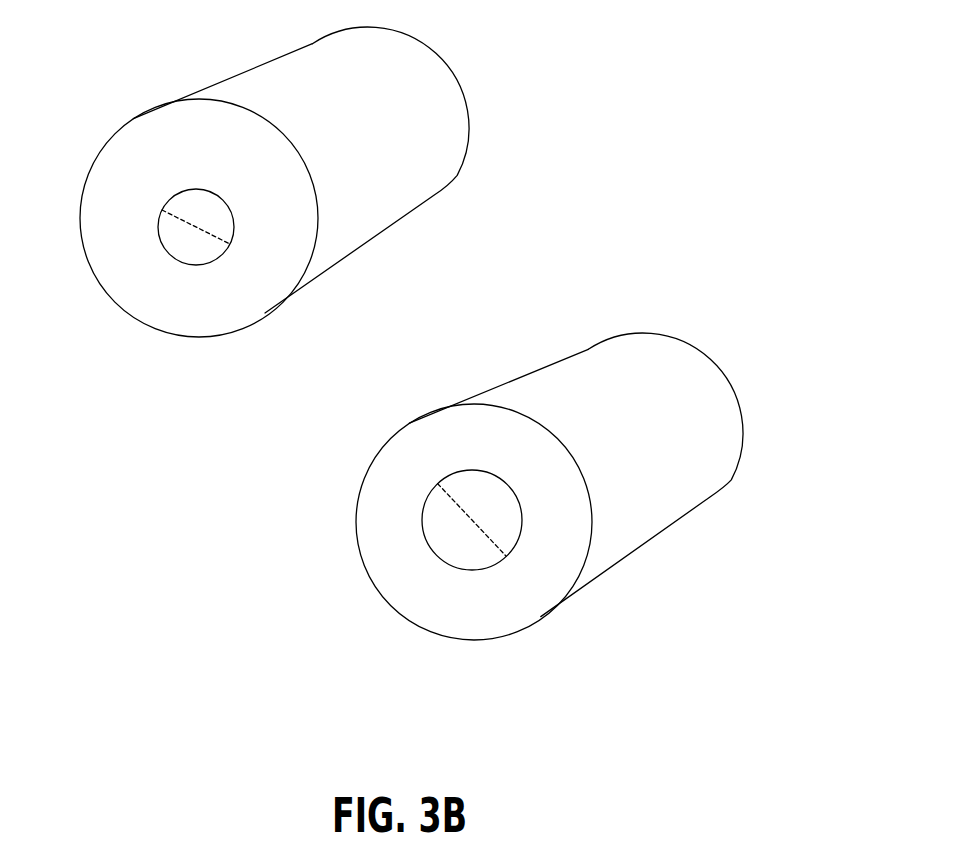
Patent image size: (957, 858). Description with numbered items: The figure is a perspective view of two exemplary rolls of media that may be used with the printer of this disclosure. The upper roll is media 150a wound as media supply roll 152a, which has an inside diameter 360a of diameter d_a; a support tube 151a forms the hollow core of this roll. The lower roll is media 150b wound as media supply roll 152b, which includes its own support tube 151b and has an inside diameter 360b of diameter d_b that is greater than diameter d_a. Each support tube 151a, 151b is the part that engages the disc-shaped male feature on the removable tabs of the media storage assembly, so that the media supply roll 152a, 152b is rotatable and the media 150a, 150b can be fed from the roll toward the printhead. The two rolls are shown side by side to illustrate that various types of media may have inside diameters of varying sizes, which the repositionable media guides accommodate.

The media 150a is at (289, 183).
The support tube 151a is at (192, 253).
The media supply roll 152a is at (259, 53).
The inside diameter 360a is at (160, 238).
The media 150b is at (555, 479).
The support tube 151b is at (455, 553).
The media supply roll 152b is at (557, 344).
The inside diameter 360b is at (423, 527).